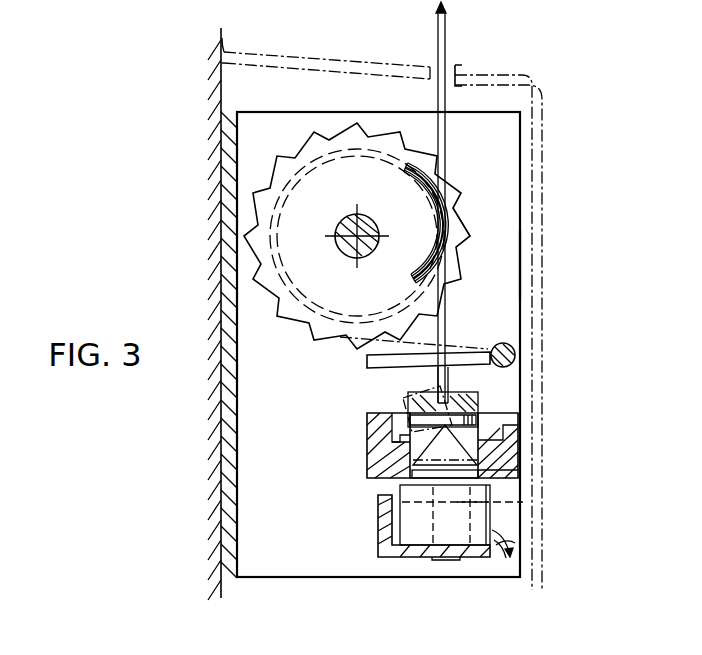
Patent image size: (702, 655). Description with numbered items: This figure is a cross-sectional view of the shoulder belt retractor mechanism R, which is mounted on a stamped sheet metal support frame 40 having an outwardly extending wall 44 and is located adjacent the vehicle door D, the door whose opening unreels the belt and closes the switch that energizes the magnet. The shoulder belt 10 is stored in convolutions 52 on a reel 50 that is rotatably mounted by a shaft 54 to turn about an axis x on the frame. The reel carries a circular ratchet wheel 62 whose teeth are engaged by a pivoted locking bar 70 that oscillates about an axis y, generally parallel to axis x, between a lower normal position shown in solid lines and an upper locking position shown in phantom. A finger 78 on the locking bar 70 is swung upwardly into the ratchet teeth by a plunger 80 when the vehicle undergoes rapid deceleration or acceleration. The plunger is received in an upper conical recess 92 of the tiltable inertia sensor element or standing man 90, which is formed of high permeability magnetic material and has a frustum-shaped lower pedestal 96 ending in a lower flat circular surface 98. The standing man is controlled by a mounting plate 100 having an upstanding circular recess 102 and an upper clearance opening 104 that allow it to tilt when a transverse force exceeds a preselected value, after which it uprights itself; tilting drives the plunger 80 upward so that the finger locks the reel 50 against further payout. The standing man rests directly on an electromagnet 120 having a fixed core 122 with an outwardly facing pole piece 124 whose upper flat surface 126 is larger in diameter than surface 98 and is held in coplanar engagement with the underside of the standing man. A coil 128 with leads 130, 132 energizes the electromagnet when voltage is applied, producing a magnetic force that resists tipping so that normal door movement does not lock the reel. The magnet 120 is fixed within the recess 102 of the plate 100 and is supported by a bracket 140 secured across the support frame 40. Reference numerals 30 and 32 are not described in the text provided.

The shoulder belt 10 is at (447, 30).
The bracket 30 is at (542, 72).
The arm 32 is at (462, 62).
The support frame 40 is at (522, 273).
The wall 44 is at (515, 140).
The reel 50 is at (451, 188).
The convolutions 52 is at (440, 258).
The shaft 54 is at (363, 251).
The ratchet wheel 62 is at (380, 148).
The locking bar 70 is at (452, 348).
The finger 78 is at (366, 362).
The plunger 80 is at (514, 364).
The inertia sensor element 90 is at (368, 443).
The conical recess 92 is at (450, 382).
The pedestal 96 is at (478, 420).
The lower flat circular surface 98 is at (480, 456).
The mounting plate 100 is at (505, 476).
The circular recess 102 is at (388, 452).
The clearance opening 104 is at (395, 415).
The electromagnet 120 is at (500, 519).
The core 122 is at (492, 505).
The pole piece 124 is at (403, 528).
The upper flat surface 126 is at (405, 484).
The coil 128 is at (388, 540).
The lead 130 is at (500, 560).
The lead 132 is at (528, 548).
The bracket 140 is at (410, 552).
The door D is at (224, 101).
The shoulder belt retractor mechanism R is at (522, 204).
The axis x is at (345, 232).
The axis y is at (512, 346).